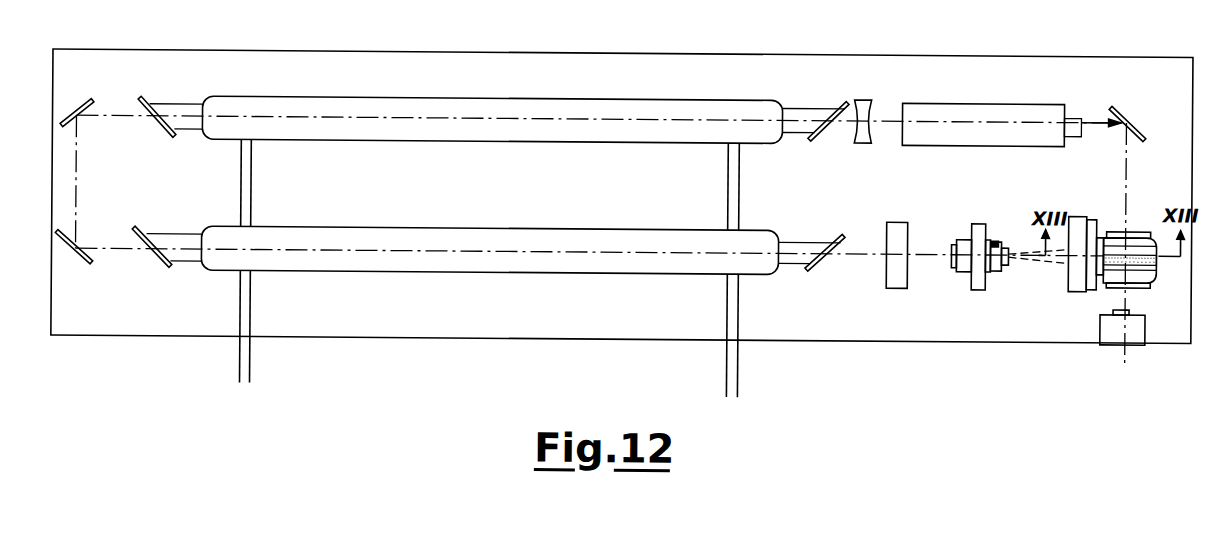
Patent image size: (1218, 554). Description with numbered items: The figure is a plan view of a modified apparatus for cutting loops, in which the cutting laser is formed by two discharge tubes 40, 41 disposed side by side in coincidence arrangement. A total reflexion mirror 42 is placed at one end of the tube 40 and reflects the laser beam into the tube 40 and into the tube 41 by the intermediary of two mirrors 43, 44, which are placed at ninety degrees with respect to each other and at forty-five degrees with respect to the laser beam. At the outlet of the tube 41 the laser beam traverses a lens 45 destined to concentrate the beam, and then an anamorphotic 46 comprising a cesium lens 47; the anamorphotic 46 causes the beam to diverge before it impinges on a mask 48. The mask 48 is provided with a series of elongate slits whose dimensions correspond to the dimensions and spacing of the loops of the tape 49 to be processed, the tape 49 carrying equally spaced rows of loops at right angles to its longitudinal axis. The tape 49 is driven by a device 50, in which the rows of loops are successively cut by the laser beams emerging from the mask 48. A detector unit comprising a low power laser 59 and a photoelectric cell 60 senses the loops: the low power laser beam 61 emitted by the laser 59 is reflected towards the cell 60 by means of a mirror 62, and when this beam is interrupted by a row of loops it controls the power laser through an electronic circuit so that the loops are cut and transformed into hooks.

The discharge tube 40 is at (457, 105).
The discharge tube 41 is at (475, 270).
The total reflexion mirror 42 is at (864, 96).
The mirror 43 is at (73, 112).
The mirror 44 is at (77, 256).
The lens 45 is at (898, 284).
The anamorphotic 46 is at (978, 285).
The cesium lens 47 is at (1058, 256).
The mask 48 is at (1092, 285).
The tape 49 is at (1146, 262).
The device 50 is at (1140, 232).
The low power laser 59 is at (1010, 98).
The photoelectric cell 60 is at (1135, 330).
The low power laser beam 61 is at (1098, 109).
The mirror 62 is at (1140, 94).